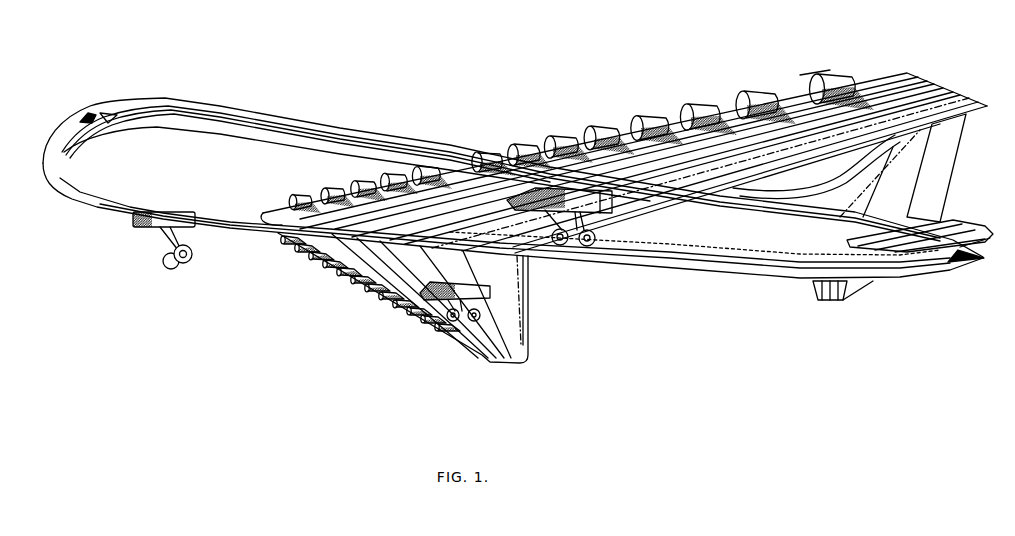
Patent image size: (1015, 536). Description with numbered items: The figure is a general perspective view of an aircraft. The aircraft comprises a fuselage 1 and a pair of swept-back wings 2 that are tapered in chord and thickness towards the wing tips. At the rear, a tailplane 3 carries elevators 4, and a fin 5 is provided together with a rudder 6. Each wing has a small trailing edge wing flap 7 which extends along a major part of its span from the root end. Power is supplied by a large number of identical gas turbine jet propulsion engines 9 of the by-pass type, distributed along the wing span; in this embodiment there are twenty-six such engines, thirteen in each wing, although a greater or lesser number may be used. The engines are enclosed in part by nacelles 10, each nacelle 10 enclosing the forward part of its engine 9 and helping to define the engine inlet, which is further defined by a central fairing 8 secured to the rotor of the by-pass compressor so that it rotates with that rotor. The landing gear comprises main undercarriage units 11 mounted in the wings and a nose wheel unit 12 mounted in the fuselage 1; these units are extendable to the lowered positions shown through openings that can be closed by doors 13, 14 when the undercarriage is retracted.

The fuselage 1 is at (318, 131).
The swept-back wings 2 is at (743, 175).
The tailplane 3 is at (952, 219).
The elevators 4 is at (975, 232).
The fin 5 is at (880, 184).
The rudder 6 is at (946, 162).
The trailing edge wing flap 7 is at (693, 195).
The central fairing 8 is at (806, 87).
The gas turbine jet propulsion engines 9 is at (796, 73).
The nacelles 10 is at (835, 72).
The main undercarriage units 11 is at (592, 247).
The nose wheel unit 12 is at (184, 264).
The door 13 is at (611, 213).
The door 14 is at (192, 229).